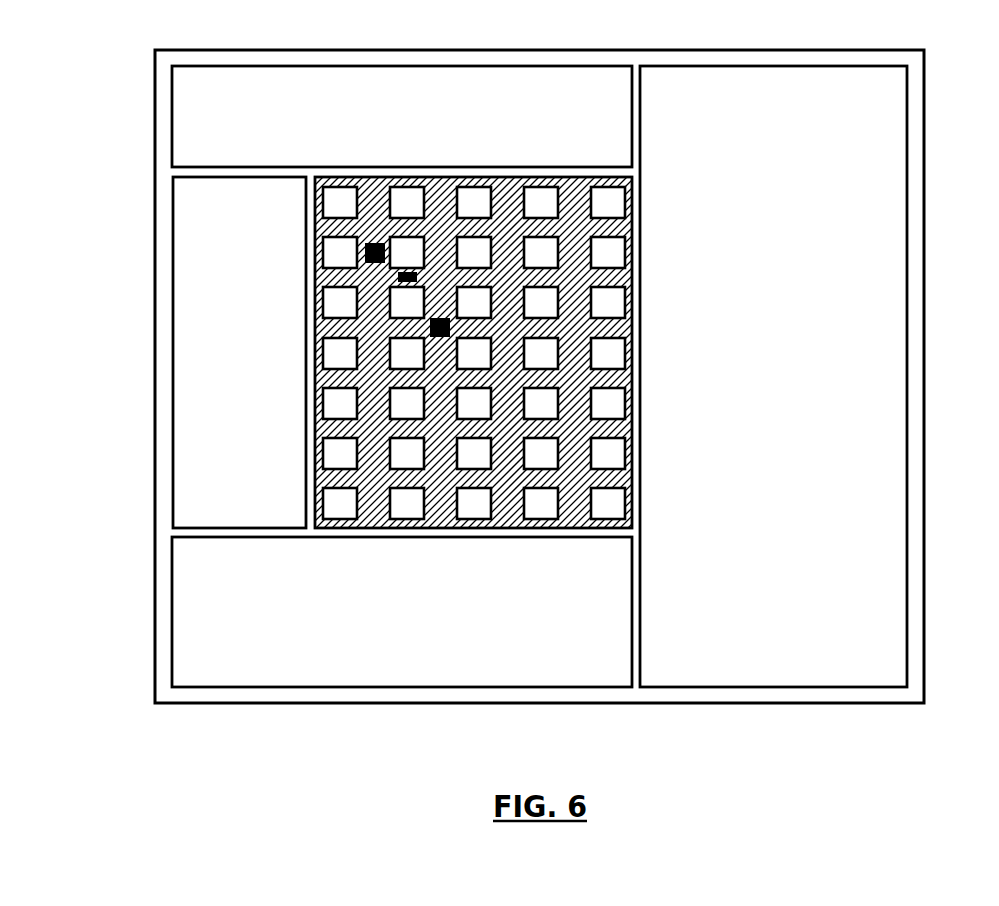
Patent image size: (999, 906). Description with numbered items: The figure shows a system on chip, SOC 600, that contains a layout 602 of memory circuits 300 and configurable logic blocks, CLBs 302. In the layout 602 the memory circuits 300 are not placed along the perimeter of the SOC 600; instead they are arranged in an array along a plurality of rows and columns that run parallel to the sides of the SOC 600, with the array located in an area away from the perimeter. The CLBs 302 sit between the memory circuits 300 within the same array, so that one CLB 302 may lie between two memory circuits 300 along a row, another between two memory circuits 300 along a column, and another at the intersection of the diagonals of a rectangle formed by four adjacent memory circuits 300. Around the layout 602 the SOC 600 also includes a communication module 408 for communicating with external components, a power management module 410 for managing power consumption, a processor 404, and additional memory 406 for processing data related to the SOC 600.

The SOC 600 is at (631, 50).
The communication module 408 is at (403, 66).
The layout 602 is at (510, 178).
The memory circuits 300 is at (317, 203).
The configurable logic blocks 302 is at (368, 253).
The power management module 410 is at (173, 352).
The processor 404 is at (172, 613).
The additional memory 406 is at (908, 378).